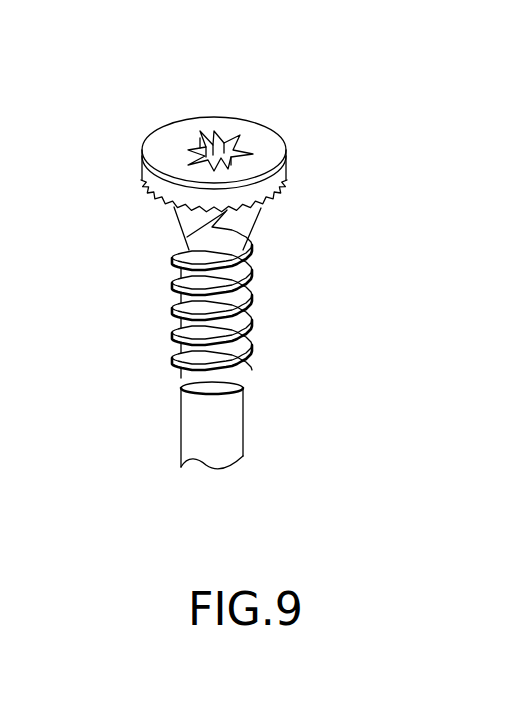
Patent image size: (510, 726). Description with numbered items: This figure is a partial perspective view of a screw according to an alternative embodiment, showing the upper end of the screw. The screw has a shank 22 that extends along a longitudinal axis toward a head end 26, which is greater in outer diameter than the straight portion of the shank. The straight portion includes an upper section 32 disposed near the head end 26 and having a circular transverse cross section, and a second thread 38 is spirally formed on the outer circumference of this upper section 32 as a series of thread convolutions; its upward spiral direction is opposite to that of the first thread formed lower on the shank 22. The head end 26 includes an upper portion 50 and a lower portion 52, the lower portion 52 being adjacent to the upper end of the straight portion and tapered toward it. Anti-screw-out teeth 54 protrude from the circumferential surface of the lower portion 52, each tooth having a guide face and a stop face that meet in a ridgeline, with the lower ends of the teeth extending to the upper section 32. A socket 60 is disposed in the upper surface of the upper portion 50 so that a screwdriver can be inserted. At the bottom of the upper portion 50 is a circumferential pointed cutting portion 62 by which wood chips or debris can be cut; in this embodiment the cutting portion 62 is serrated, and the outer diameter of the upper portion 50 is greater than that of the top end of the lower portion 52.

The shank 22 is at (232, 420).
The head end 26 is at (288, 171).
The upper section 32 is at (179, 290).
The second thread 38 is at (250, 334).
The upper portion 50 is at (143, 170).
The lower portion 52 is at (193, 227).
The anti-screw-out teeth 54 is at (237, 228).
The socket 60 is at (230, 138).
The cutting portion 62 is at (284, 192).